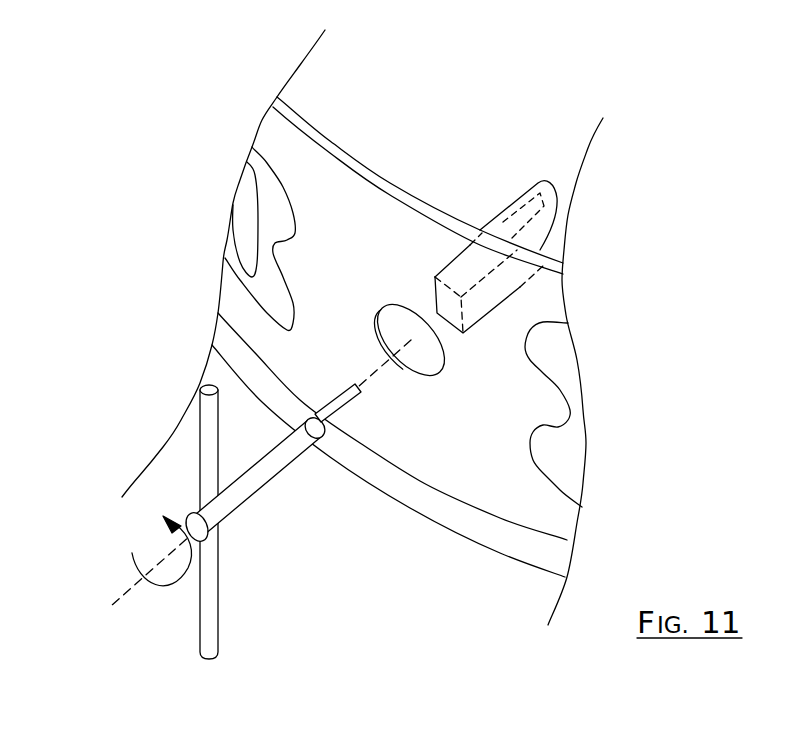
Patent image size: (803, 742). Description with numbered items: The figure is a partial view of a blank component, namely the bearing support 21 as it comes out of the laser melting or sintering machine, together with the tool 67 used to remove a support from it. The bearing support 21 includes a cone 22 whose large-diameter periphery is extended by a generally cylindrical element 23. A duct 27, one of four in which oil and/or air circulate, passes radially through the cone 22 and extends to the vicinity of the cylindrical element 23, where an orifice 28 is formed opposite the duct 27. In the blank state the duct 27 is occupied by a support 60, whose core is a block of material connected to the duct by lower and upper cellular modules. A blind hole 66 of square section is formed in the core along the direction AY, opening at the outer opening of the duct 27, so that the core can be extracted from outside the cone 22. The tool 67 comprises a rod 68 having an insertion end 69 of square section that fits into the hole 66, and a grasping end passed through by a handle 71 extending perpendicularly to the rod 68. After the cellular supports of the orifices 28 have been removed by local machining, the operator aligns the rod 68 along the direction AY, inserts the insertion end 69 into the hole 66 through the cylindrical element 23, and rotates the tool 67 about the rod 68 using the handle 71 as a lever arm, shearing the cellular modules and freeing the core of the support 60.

The bearing support 21 is at (150, 179).
The cone 22 is at (320, 82).
The cylindrical element 23 is at (460, 461).
The duct 27 is at (545, 180).
The orifice 28 is at (480, 377).
The support 60 is at (497, 181).
The blind hole 66 is at (435, 307).
The tool 67 is at (158, 669).
The rod 68 is at (248, 487).
The insertion end 69 is at (348, 400).
The handle 71 is at (210, 447).
The direction AY is at (127, 590).